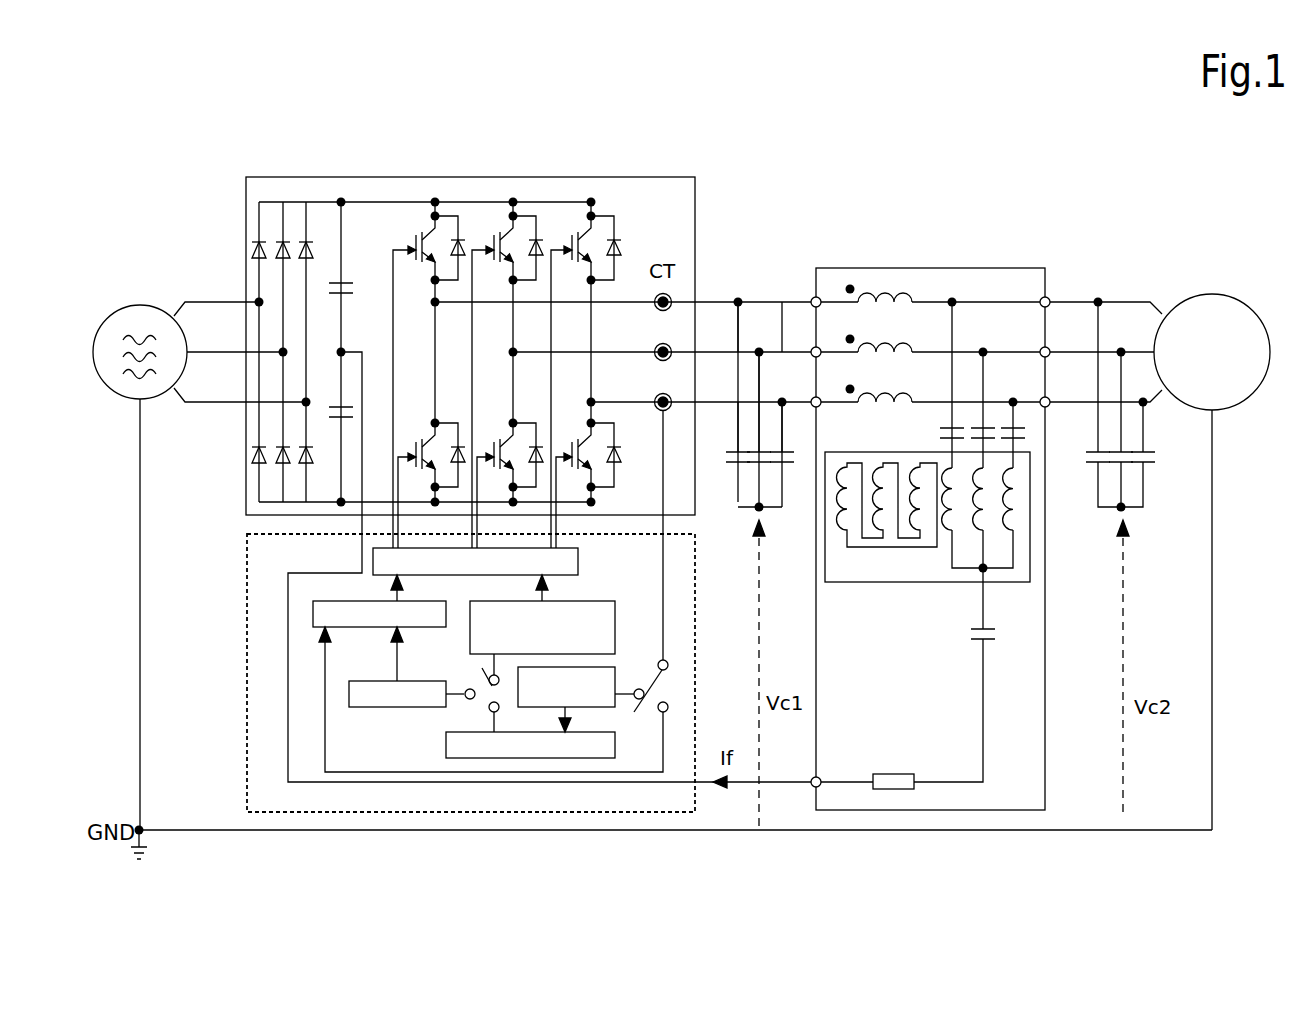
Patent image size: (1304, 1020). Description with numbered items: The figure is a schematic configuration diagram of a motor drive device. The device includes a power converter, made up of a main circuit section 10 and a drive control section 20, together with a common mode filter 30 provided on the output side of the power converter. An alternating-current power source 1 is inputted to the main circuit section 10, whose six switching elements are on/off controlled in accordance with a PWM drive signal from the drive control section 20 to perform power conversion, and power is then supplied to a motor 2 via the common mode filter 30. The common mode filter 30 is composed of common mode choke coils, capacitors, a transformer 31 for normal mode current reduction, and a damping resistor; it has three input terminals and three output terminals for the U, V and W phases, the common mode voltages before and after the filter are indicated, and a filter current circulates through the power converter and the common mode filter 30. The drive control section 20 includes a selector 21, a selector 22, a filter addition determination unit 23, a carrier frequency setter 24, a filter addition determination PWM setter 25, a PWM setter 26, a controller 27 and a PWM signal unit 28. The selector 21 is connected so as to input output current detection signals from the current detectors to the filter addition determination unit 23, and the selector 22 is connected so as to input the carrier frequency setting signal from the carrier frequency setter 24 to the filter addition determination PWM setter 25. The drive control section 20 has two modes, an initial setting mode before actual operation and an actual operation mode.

The alternating-current power source 1 is at (146, 304).
The motor 2 is at (1160, 562).
The main circuit section 10 is at (275, 177).
The drive control section 20 is at (247, 663).
The selector 21 is at (664, 690).
The selector 22 is at (482, 697).
The filter addition determination unit 23 is at (615, 675).
The carrier frequency setter 24 is at (615, 757).
The filter addition determination PWM setter 25 is at (615, 617).
The PWM setter 26 is at (375, 707).
The controller 27 is at (378, 627).
The PWM signal unit 28 is at (580, 572).
The common mode filter 30 is at (933, 514).
The transformer 31 is at (875, 582).